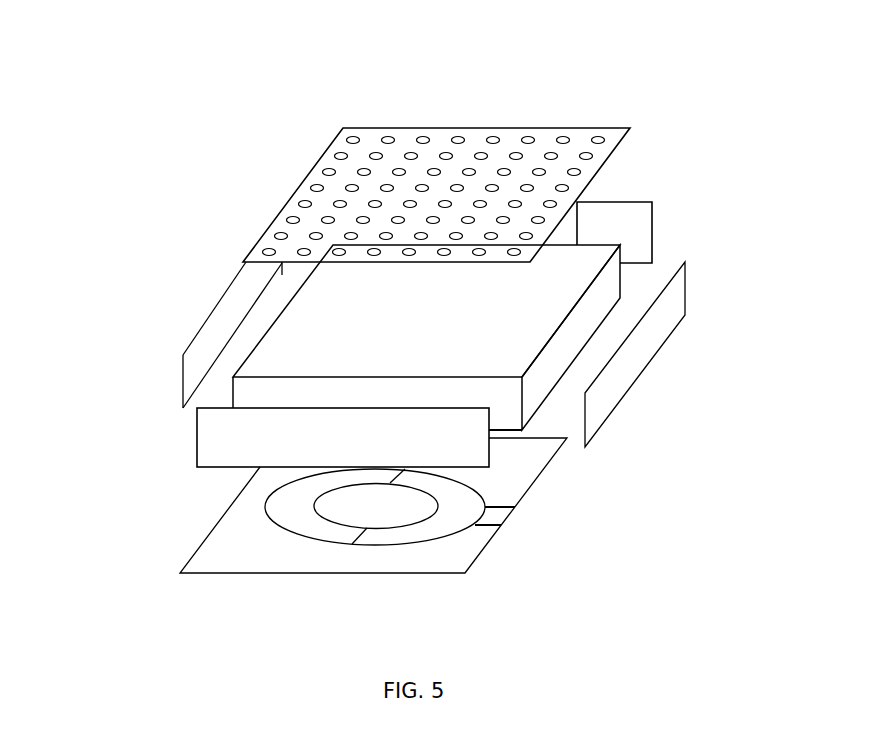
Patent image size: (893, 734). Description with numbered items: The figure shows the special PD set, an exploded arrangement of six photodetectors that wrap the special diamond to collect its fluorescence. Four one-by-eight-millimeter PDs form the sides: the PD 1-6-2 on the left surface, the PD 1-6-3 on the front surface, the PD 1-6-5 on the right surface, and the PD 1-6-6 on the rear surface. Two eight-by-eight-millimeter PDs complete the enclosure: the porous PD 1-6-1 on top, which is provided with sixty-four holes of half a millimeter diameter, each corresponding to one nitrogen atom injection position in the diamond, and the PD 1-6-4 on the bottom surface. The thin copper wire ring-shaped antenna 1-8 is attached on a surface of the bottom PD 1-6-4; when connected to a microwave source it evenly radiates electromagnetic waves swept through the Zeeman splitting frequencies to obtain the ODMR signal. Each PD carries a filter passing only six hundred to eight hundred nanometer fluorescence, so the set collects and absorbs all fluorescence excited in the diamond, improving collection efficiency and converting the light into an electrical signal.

The porous PD 1-6-1 is at (396, 151).
The PD 1-6-2 is at (177, 294).
The PD 1-6-3 is at (263, 458).
The PD 1-6-4 is at (359, 542).
The PD 1-6-5 is at (684, 372).
The PD 1-6-6 is at (677, 191).
The ring-shaped antenna 1-8 is at (410, 548).